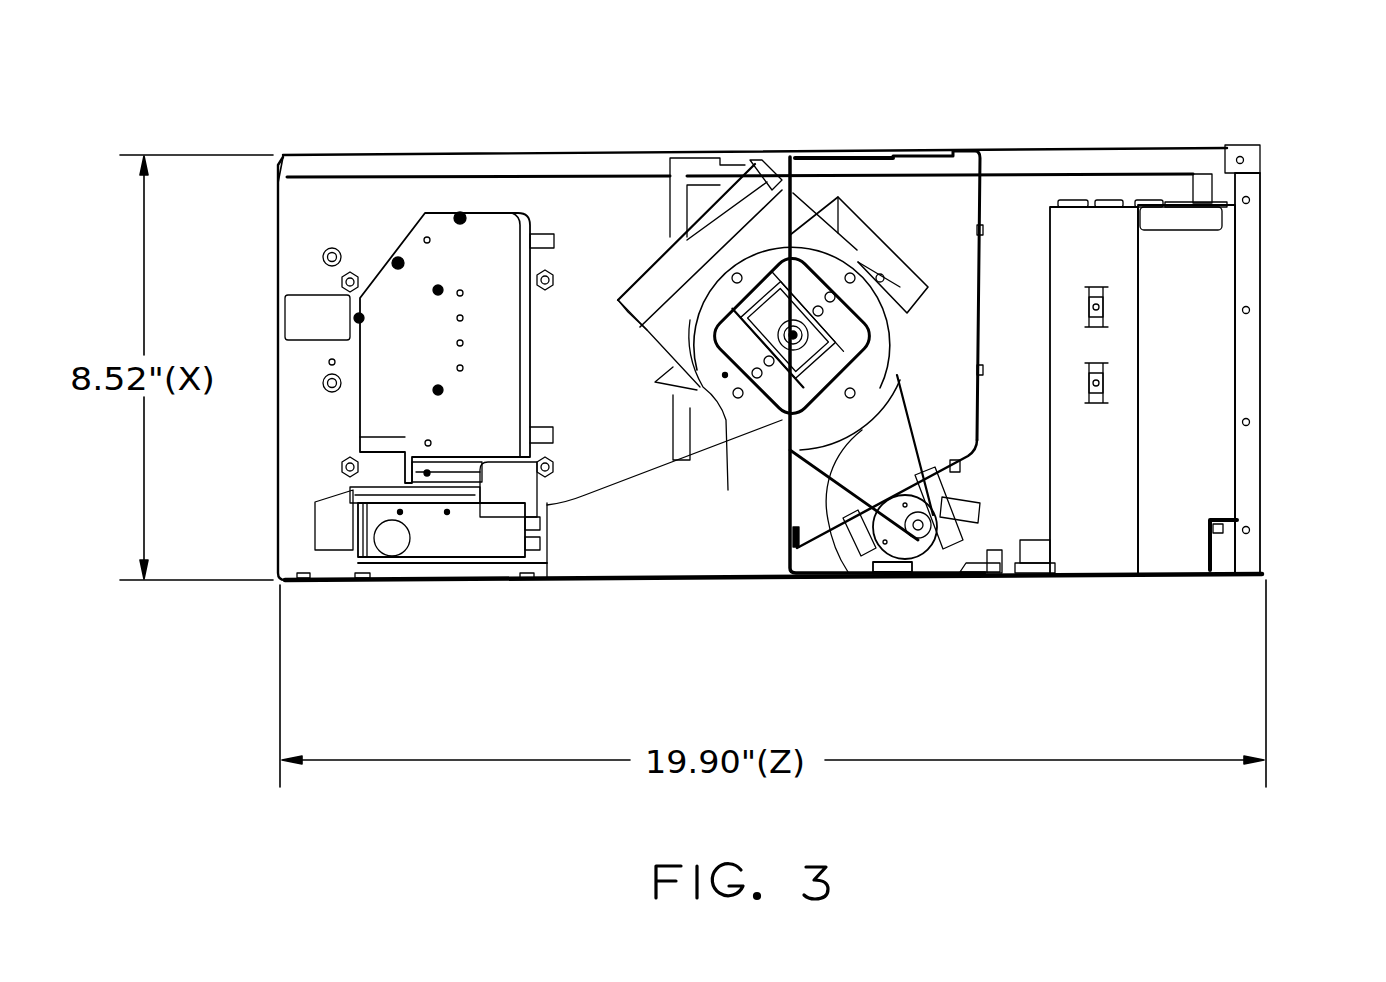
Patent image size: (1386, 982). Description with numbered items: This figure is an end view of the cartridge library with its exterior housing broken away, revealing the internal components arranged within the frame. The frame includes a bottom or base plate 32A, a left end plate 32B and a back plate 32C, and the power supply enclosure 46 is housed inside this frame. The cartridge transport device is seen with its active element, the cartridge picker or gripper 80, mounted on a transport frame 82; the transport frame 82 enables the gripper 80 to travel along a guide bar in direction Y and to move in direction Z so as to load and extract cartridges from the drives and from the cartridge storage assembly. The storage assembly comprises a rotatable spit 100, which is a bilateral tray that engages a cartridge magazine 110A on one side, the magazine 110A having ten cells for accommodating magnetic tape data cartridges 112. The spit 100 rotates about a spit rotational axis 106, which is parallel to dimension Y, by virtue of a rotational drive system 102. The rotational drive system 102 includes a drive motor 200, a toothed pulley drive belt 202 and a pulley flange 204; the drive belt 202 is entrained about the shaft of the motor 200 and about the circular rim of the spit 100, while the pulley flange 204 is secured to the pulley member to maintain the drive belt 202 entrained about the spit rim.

The base plate 32A is at (323, 585).
The left end plate 32B is at (362, 222).
The back plate 32C is at (1248, 241).
The power supply enclosure 46 is at (1183, 377).
The cartridge picker or gripper 80 is at (440, 355).
The transport frame 82 is at (458, 537).
The rotatable spit 100 is at (860, 233).
The rotational drive system 102 is at (976, 496).
The spit rotational axis 106 is at (728, 490).
The cartridge magazine 110A is at (806, 222).
The magnetic tape data cartridge 112 is at (702, 242).
The drive motor 200 is at (947, 543).
The toothed pulley drive belt 202 is at (812, 578).
The pulley flange 204 is at (867, 283).